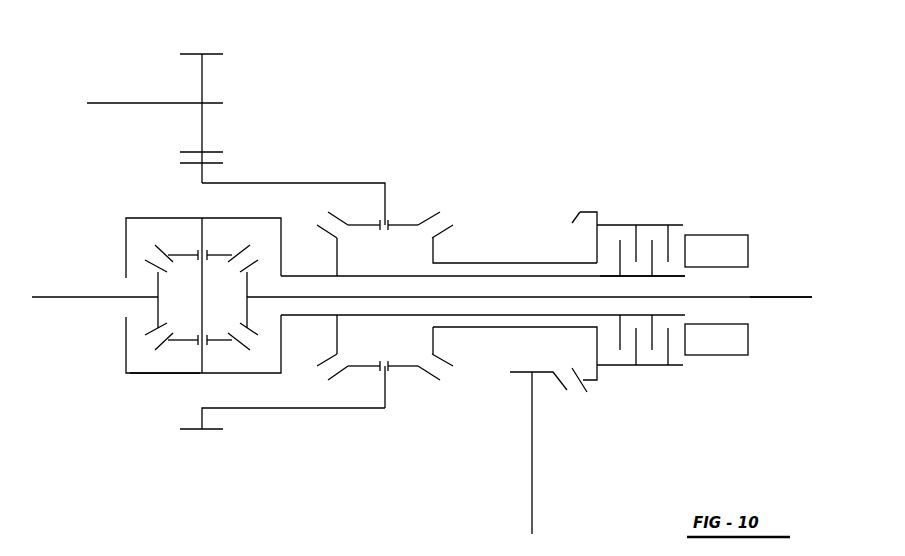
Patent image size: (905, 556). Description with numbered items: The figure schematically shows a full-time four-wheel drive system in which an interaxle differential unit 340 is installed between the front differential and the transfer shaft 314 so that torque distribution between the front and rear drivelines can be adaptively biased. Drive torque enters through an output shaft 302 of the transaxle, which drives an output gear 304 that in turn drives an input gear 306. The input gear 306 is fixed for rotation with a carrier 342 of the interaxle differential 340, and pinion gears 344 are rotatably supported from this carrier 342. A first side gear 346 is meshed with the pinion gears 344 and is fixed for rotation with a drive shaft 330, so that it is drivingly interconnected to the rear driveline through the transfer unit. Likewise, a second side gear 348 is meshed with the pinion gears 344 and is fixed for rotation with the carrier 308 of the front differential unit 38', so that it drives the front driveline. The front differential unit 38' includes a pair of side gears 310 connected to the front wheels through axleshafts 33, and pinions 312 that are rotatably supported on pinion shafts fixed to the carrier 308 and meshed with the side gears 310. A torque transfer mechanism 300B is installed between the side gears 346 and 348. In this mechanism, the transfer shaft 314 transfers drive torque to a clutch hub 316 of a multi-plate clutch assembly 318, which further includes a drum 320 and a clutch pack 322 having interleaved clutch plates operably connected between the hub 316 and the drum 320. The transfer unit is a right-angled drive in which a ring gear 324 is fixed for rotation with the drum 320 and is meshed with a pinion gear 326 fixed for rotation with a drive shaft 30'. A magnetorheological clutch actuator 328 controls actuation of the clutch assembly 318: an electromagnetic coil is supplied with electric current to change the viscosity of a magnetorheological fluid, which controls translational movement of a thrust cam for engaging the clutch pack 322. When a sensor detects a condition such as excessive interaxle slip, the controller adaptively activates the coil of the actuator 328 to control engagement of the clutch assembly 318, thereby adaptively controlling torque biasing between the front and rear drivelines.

The output shaft 302 is at (125, 102).
The output gear 304 is at (217, 53).
The input gear 306 is at (215, 430).
The carrier 308 is at (147, 218).
The side gears 310 is at (245, 310).
The pinions 312 is at (213, 247).
The transfer shaft 314 is at (480, 315).
The clutch hub 316 is at (642, 277).
The multi-plate clutch assembly 318 is at (645, 220).
The drum 320 is at (677, 365).
The clutch pack 322 is at (627, 240).
The ring gear 324 is at (580, 207).
The pinion gear 326 is at (510, 372).
The magnetorheological clutch actuator 328 is at (757, 247).
The drive shaft 330 is at (525, 263).
The axleshafts 33 is at (57, 297).
The interaxle differential unit 340 is at (415, 193).
The carrier 342 is at (293, 183).
The pinion gears 344 is at (368, 228).
The first side gear 346 is at (433, 247).
The second side gear 348 is at (337, 333).
The front differential unit 38' is at (131, 421).
The drive shaft 30' is at (567, 497).
The torque transfer mechanism 300B is at (770, 157).